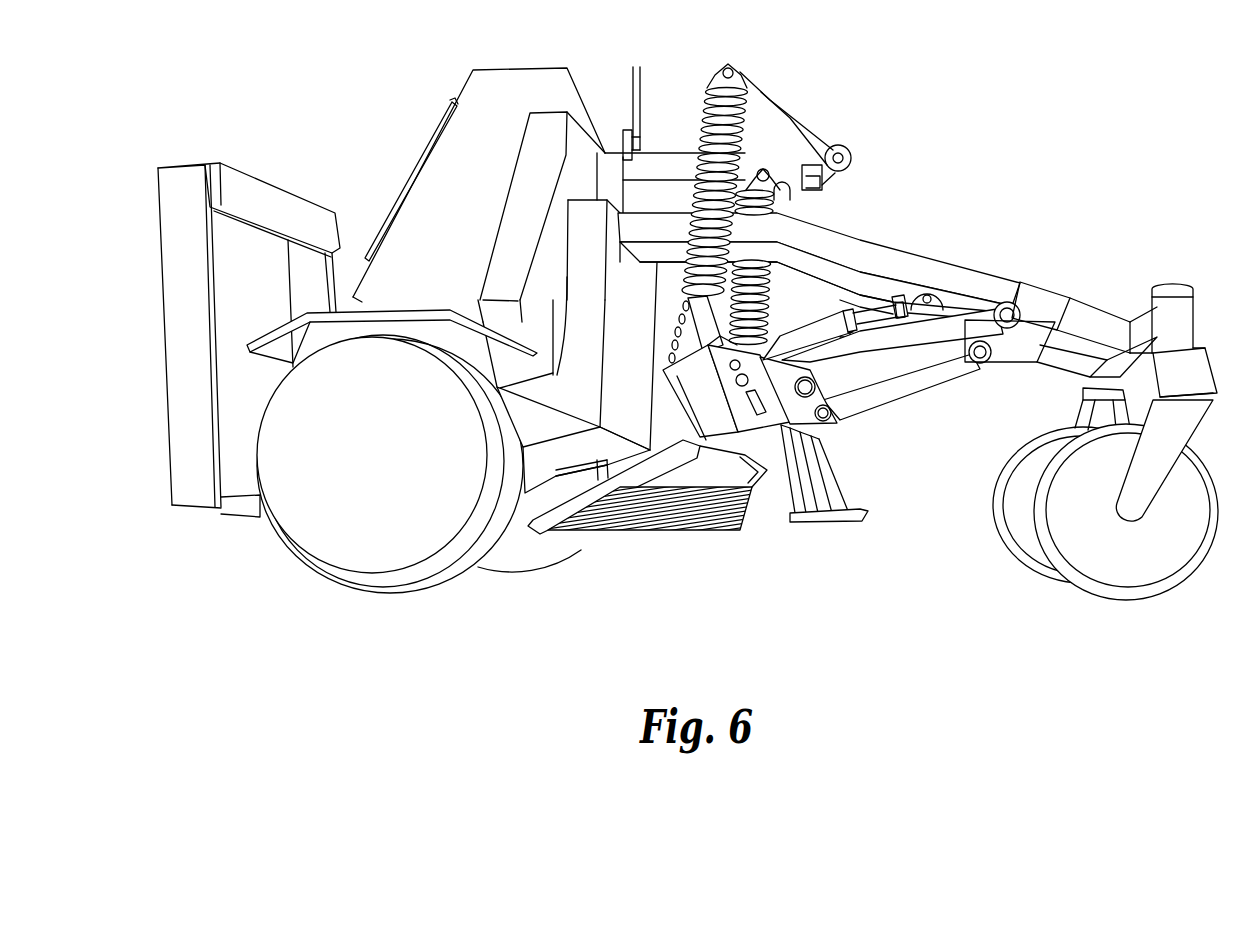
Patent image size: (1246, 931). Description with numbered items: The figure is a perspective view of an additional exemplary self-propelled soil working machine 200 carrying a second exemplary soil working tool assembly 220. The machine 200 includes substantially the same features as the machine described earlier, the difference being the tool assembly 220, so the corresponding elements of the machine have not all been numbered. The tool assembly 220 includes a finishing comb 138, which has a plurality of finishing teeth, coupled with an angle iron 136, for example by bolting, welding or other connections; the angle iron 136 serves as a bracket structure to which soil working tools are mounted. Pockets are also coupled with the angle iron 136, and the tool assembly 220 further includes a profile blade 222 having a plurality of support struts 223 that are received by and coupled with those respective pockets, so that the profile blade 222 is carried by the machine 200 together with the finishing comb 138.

The self-propelled soil working machine 200 is at (353, 91).
The angle iron 136 is at (758, 362).
The finishing comb 138 is at (569, 507).
The soil working tool assembly 220 is at (752, 538).
The profile blade 222 is at (862, 514).
The support struts 223 is at (851, 468).